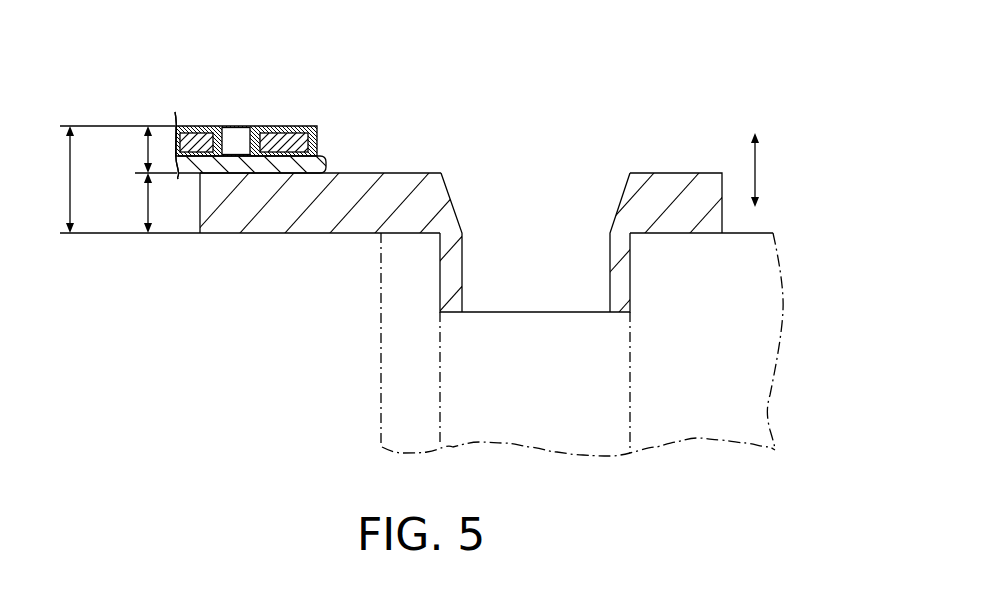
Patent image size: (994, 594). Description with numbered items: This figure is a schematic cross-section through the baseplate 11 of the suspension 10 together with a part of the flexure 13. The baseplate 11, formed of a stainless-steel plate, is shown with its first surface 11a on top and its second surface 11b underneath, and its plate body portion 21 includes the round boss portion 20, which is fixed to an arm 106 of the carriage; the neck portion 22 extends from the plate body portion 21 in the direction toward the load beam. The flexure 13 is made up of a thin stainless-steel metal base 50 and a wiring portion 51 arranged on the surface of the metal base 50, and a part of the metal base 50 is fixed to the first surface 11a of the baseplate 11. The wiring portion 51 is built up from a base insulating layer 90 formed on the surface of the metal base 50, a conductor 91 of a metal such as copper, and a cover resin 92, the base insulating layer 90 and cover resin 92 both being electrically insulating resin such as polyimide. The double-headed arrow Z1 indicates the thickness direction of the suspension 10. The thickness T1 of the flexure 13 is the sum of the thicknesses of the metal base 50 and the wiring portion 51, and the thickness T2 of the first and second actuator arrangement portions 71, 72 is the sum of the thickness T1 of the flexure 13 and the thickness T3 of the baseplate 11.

The suspension 10 is at (558, 76).
The baseplate 11 is at (672, 178).
The first surface 11a is at (397, 172).
The second surface 11b is at (310, 234).
The flexure 13 is at (306, 114).
The boss portion 20 is at (626, 283).
The plate body portion 21 is at (410, 222).
The neck portion 22 is at (253, 229).
The metal base 50 is at (326, 162).
The wiring portion 51 is at (202, 126).
The first actuator arrangement portion 71 is at (206, 96).
The second actuator arrangement portion 72 is at (206, 96).
The base insulating layer 90 is at (319, 143).
The conductor 91 is at (281, 126).
The cover resin 92 is at (277, 126).
The arm 106 is at (695, 441).
The thickness of the flexure T1 is at (145, 152).
The thickness of the actuator arrangement portions T2 is at (67, 182).
The thickness of the baseplate T3 is at (145, 207).
The thickness direction Z1 is at (758, 172).